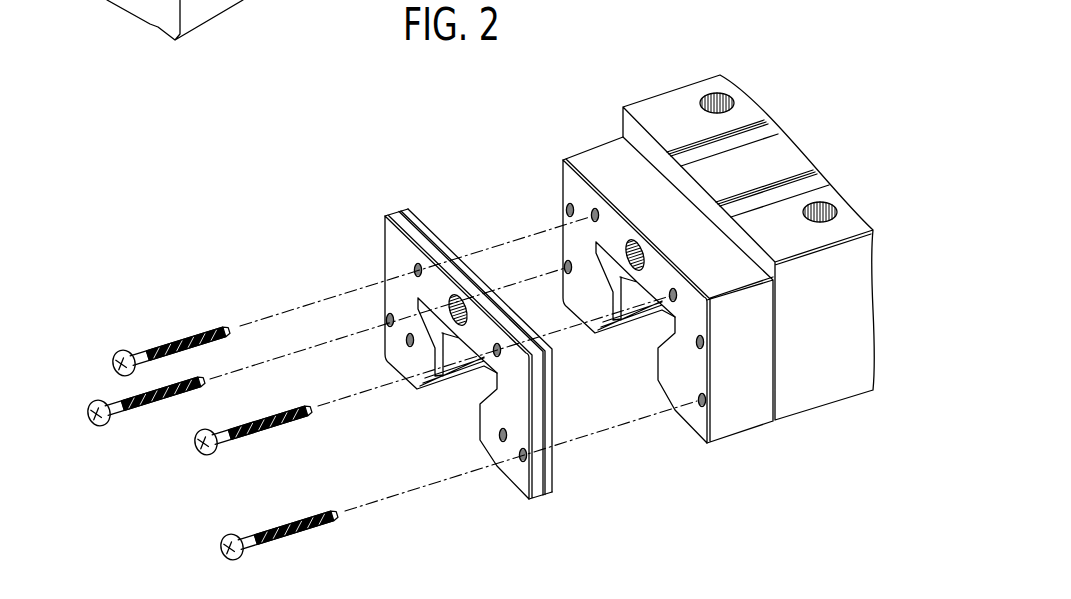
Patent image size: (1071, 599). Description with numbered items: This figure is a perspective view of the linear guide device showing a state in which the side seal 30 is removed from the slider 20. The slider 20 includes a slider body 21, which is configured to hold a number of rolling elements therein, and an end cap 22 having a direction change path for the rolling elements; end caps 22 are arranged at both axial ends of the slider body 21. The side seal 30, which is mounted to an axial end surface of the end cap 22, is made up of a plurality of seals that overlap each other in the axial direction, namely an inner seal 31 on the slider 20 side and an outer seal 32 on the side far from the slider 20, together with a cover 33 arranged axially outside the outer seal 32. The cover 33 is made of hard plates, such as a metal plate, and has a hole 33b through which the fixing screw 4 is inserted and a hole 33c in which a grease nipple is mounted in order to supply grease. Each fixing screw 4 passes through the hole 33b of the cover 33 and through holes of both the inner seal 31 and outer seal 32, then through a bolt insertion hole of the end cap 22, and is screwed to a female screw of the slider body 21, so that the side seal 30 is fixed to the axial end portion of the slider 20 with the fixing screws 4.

The fixing screw 4 is at (163, 377).
The slider 20 is at (710, 223).
The slider body 21 is at (748, 227).
The end cap 22 is at (605, 152).
The side seal 30 is at (455, 306).
The inner seal 31 is at (407, 207).
The outer seal 32 is at (392, 211).
The cover 33 is at (382, 226).
The hole 33b is at (386, 315).
The hole 33c is at (458, 296).